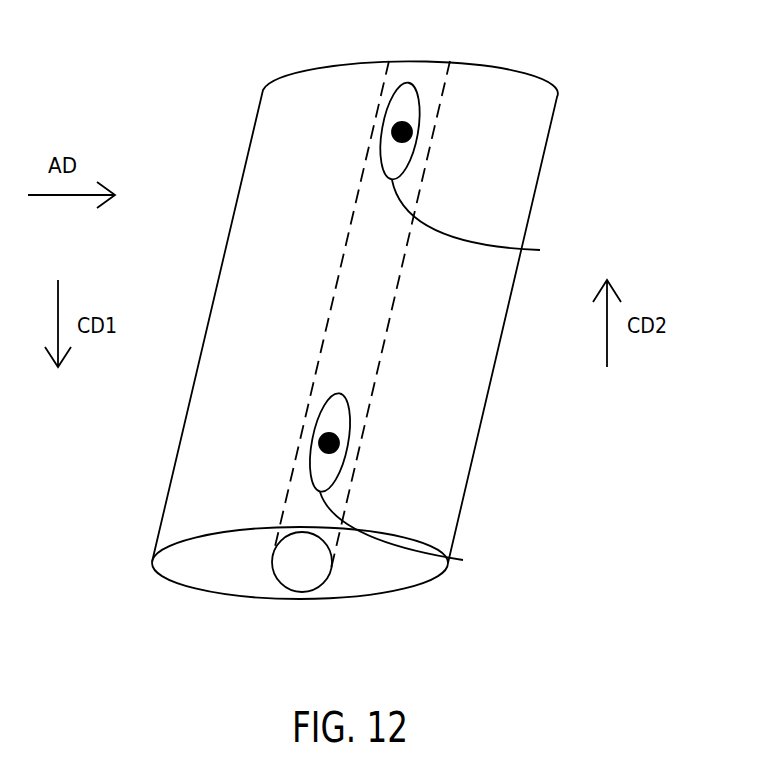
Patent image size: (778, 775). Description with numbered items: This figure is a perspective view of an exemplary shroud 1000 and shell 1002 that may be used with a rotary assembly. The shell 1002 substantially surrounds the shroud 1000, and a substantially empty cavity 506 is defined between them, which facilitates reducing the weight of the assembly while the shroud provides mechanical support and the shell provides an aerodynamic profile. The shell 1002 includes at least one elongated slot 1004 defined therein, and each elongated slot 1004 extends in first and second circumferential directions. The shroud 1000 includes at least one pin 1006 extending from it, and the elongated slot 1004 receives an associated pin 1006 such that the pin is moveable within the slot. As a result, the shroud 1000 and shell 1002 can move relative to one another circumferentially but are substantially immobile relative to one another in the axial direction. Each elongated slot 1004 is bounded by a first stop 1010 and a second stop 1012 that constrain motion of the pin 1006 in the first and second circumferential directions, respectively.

The cavity 506 is at (232, 568).
The shroud 1000 is at (302, 570).
The shell 1002 is at (437, 432).
The elongated slot 1004 is at (415, 98).
The pin 1006 is at (410, 136).
The first stop 1010 is at (456, 376).
The second stop 1012 is at (408, 82).